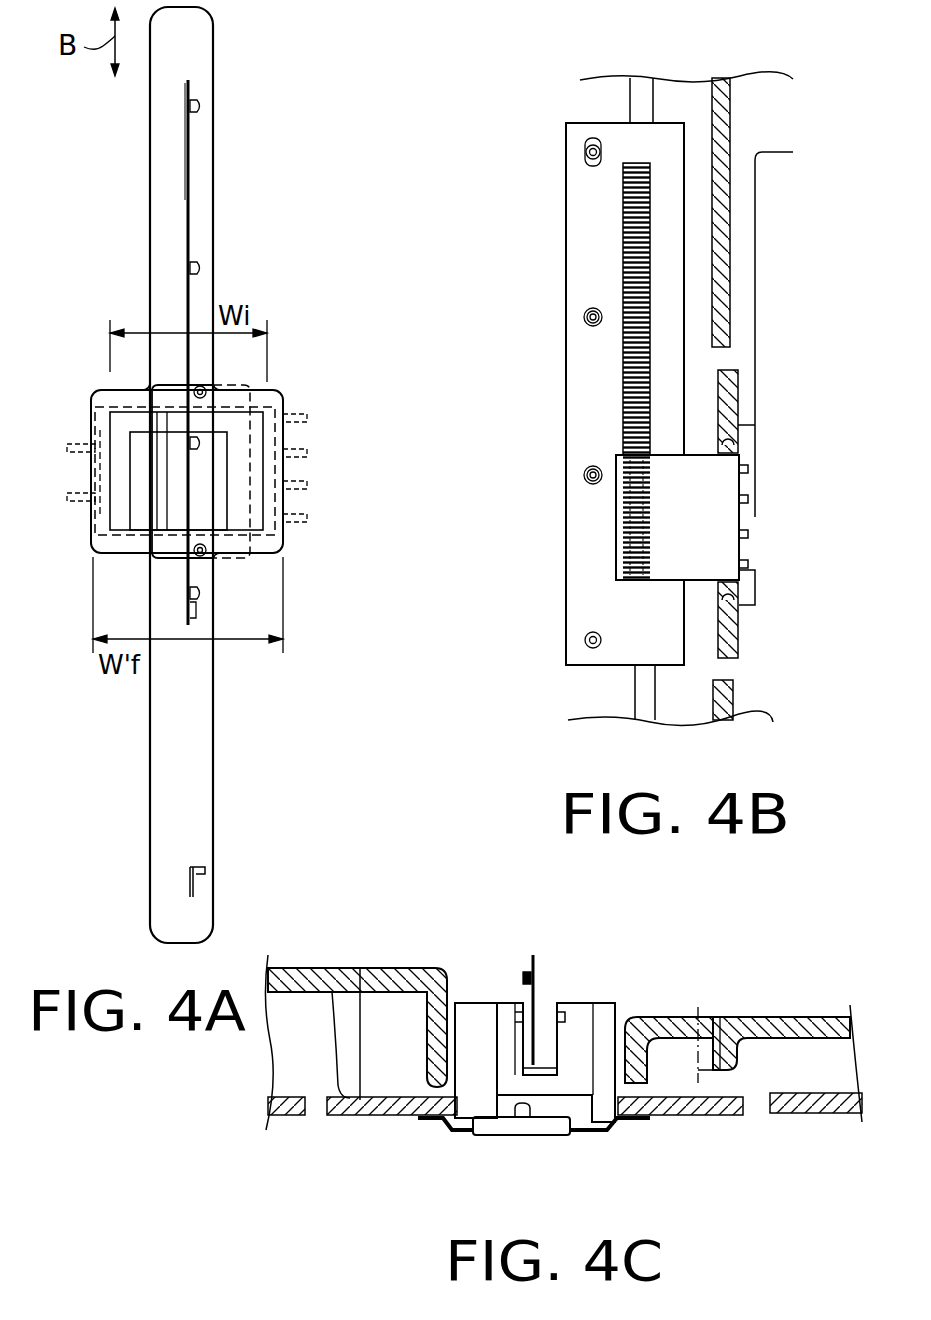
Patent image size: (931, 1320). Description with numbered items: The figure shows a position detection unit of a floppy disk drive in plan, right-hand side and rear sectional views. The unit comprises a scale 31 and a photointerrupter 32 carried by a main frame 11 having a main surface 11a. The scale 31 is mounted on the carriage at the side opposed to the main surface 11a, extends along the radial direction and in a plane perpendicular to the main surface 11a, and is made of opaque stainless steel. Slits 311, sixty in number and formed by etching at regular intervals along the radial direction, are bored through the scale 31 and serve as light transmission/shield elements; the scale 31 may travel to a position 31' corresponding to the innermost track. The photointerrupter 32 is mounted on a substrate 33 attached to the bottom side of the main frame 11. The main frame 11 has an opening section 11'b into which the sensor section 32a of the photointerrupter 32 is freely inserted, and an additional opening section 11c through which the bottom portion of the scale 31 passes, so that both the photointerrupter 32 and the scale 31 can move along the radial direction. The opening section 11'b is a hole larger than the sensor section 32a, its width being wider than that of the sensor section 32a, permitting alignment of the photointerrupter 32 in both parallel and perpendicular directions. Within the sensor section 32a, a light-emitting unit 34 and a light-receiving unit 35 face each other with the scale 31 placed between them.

In FIG. 4B, the main frame 11 is at (646, 399).
In FIG. 4C, the main frame 11 is at (565, 1008).
In FIG. 4A, the main surface 11a is at (130, 253).
In FIG. 4B, the main surface 11a is at (636, 710).
In FIG. 4C, the main surface 11a is at (410, 970).
In FIG. 4A, the additional opening section 11c is at (190, 48).
In FIG. 4A, the opening section 11'b is at (239, 487).
In FIG. 4C, the opening section 11'b is at (676, 1009).
In FIG. 4A, the scale 31 is at (238, 352).
In FIG. 4B, the scale 31 is at (591, 394).
In FIG. 4C, the scale 31 is at (559, 985).
In FIG. 4A, the scale position 31' is at (245, 885).
In FIG. 4B, the slits 311 is at (628, 160).
In FIG. 4A, the photointerrupter 32 is at (245, 502).
In FIG. 4B, the photointerrupter 32 is at (695, 550).
In FIG. 4C, the photointerrupter 32 is at (568, 1082).
In FIG. 4B, the sensor section 32a is at (660, 473).
In FIG. 4C, the sensor section 32a is at (465, 1033).
In FIG. 4B, the substrate 33 is at (738, 622).
In FIG. 4C, the substrate 33 is at (370, 1112).
In FIG. 4A, the light-emitting unit 34 is at (152, 480).
In FIG. 4C, the light-emitting unit 34 is at (580, 1008).
In FIG. 4A, the light-receiving unit 35 is at (220, 448).
In FIG. 4C, the light-receiving unit 35 is at (512, 1010).